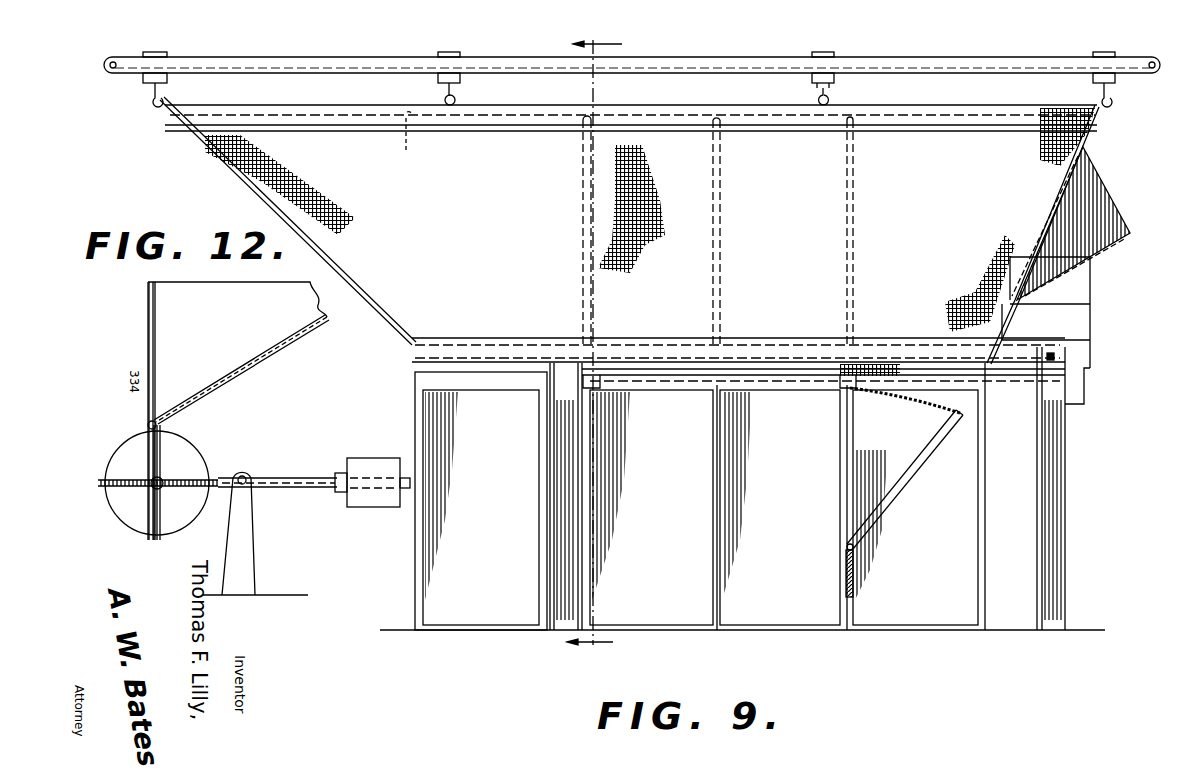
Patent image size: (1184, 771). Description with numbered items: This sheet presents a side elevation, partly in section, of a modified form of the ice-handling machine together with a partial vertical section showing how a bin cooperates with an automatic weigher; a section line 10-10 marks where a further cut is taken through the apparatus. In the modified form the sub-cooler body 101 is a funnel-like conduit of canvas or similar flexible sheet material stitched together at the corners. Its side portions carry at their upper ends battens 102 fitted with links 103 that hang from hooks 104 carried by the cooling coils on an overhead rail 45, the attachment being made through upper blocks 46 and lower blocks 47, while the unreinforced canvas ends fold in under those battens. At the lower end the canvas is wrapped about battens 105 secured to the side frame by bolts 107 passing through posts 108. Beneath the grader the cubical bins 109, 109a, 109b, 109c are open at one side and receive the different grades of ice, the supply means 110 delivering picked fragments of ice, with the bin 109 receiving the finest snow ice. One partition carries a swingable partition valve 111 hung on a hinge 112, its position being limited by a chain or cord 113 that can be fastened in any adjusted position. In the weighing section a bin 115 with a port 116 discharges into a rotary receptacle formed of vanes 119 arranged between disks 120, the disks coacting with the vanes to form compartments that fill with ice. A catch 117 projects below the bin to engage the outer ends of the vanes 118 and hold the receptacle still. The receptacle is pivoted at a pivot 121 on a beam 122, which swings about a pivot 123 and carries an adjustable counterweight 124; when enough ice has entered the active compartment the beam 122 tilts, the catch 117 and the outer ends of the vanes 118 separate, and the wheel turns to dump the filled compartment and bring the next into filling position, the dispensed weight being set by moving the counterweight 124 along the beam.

In FIG. 9, the section line 10- 10 is at (610, 345).
In FIG. 9, the overhead rail 45 is at (258, 68).
In FIG. 9, the upper blocks 46 is at (838, 55).
In FIG. 9, the lower blocks 47 is at (846, 83).
In FIG. 9, the sub-cooler body 101 is at (388, 312).
In FIG. 9, the battens 102 is at (631, 233).
In FIG. 9, the links 103 is at (455, 100).
In FIG. 9, the hooks 104 is at (440, 86).
In FIG. 9, the battens 105 is at (1018, 362).
In FIG. 9, the bolts 107 is at (1052, 362).
In FIG. 9, the posts 108 is at (565, 505).
In FIG. 9, the cubical bin 109 is at (952, 628).
In FIG. 9, the cubical bin 109a is at (803, 628).
In FIG. 9, the cubical bin 109b is at (656, 628).
In FIG. 9, the cubical bin 109c is at (490, 628).
In FIG. 9, the supply means 110 is at (1106, 196).
In FIG. 9, the swingable partition valve 111 is at (905, 478).
In FIG. 9, the hinge 112 is at (845, 548).
In FIG. 9, the chain or cord 113 is at (910, 400).
In FIG. 12, the bin 115 is at (255, 365).
In FIG. 12, the port 116 is at (167, 390).
In FIG. 12, the catch 117 is at (146, 426).
In FIG. 12, the outer ends of the vanes 118 is at (100, 480).
In FIG. 12, the vanes 119 is at (168, 512).
In FIG. 12, the disks 120 is at (196, 457).
In FIG. 12, the pivot 121 is at (150, 490).
In FIG. 12, the beam 122 is at (300, 490).
In FIG. 12, the pivot 123 is at (245, 478).
In FIG. 12, the counterweight 124 is at (355, 508).